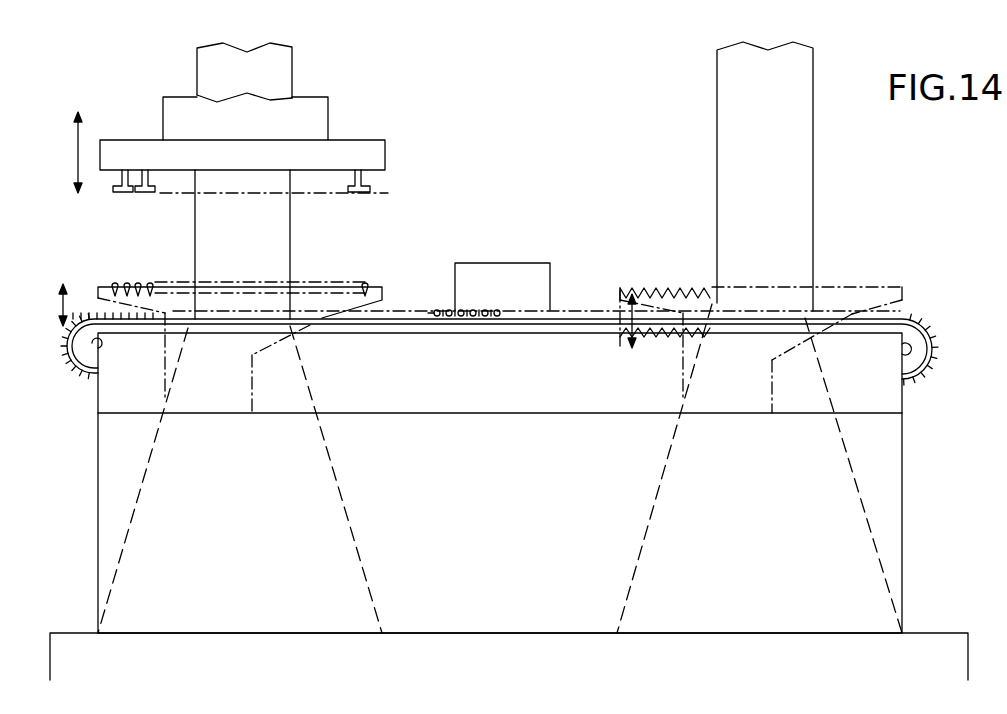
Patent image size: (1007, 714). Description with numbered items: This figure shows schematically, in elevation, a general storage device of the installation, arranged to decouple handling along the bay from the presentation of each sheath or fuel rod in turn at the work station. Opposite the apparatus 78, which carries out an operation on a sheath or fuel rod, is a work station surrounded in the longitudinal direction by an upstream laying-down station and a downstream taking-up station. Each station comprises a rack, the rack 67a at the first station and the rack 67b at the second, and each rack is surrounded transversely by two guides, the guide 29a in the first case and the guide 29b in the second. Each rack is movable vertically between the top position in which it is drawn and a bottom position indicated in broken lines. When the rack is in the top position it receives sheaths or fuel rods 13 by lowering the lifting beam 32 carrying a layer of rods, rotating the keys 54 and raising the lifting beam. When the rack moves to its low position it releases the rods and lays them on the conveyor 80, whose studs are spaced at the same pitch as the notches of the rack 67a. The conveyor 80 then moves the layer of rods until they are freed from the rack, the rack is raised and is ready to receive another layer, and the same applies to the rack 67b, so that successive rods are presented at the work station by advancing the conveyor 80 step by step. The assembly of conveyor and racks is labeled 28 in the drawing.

The guide 29a is at (293, 63).
The lifting beam 32 is at (328, 123).
The keys 54 is at (370, 187).
The guide 29b is at (717, 103).
The rack 67a is at (107, 283).
The sheaths or fuel rods 13 is at (140, 282).
The apparatus 78 is at (489, 263).
The conveyor 28 is at (557, 300).
The conveyor 80 is at (413, 320).
The rack 67b is at (846, 284).